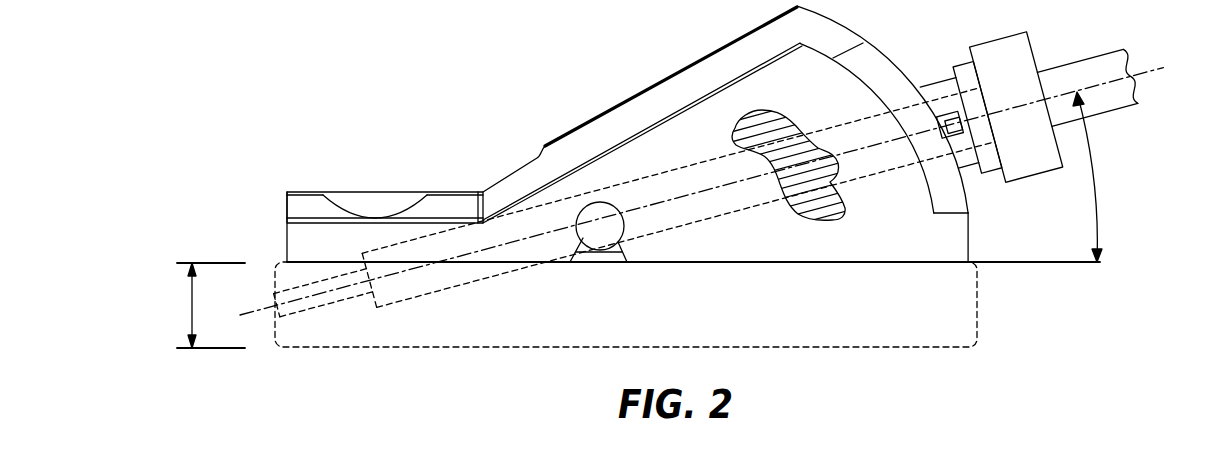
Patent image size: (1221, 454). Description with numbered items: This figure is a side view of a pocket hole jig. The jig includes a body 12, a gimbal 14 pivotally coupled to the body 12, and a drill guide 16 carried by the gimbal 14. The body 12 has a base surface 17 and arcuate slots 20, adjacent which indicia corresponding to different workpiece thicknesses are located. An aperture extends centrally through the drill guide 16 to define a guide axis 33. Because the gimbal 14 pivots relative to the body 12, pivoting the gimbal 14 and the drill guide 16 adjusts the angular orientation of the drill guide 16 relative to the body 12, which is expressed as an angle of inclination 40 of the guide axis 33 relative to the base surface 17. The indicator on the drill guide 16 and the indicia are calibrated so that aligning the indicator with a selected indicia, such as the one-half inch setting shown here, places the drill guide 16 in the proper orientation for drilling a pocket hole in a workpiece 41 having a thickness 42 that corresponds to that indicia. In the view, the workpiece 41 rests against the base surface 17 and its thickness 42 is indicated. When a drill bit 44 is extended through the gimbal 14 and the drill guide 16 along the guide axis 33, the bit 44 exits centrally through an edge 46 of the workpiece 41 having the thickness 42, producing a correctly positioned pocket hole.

The body 12 is at (628, 100).
The gimbal 14 is at (600, 232).
The drill guide 16 is at (929, 88).
The base surface 17 is at (750, 265).
The arcuate slots 20 is at (845, 212).
The guide axis 33 is at (1152, 68).
The angle of inclination 40 is at (1095, 188).
The workpiece 41 is at (982, 300).
The thickness 42 is at (190, 306).
The drill bit 44 is at (332, 305).
The edge 46 is at (274, 282).